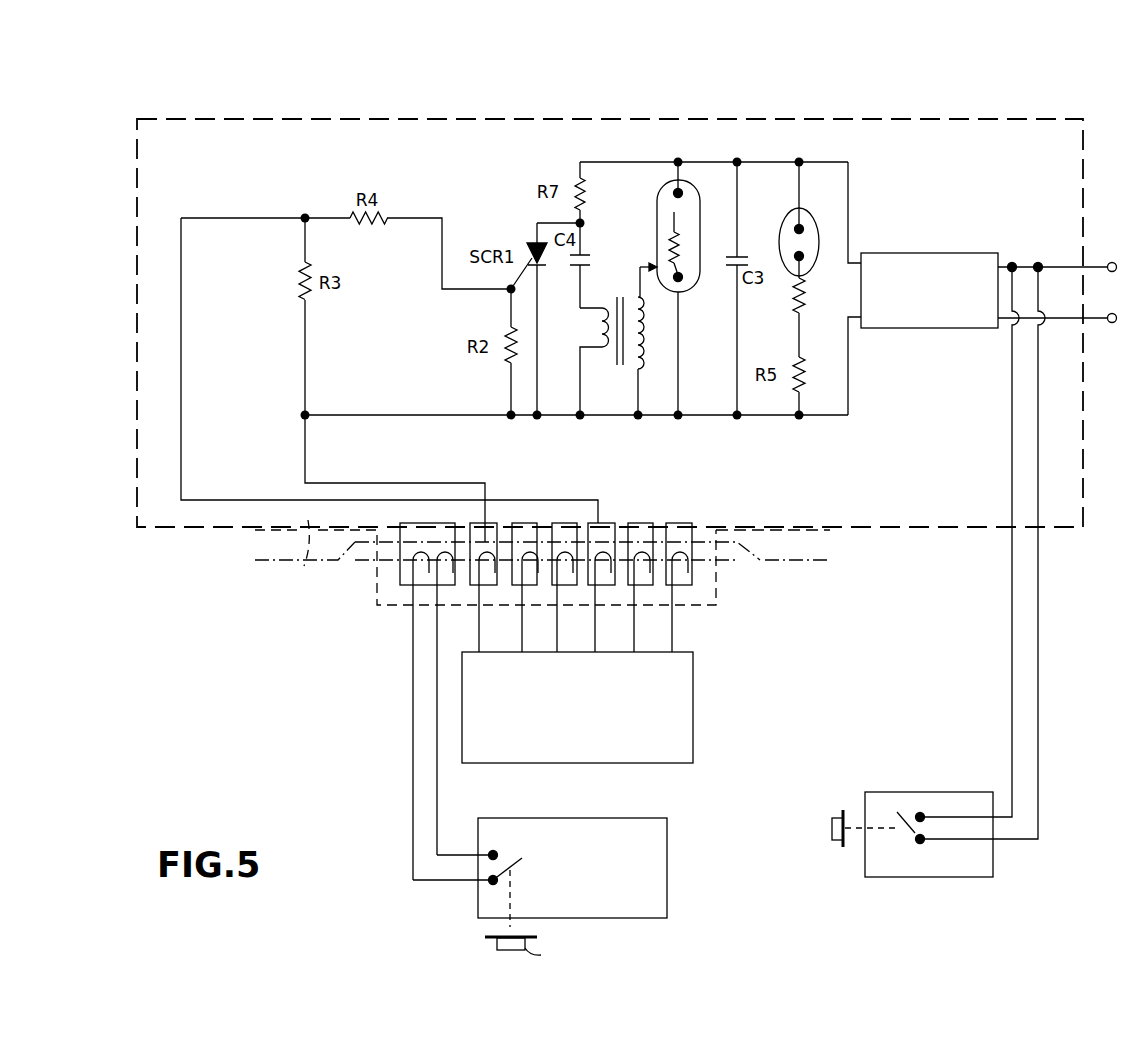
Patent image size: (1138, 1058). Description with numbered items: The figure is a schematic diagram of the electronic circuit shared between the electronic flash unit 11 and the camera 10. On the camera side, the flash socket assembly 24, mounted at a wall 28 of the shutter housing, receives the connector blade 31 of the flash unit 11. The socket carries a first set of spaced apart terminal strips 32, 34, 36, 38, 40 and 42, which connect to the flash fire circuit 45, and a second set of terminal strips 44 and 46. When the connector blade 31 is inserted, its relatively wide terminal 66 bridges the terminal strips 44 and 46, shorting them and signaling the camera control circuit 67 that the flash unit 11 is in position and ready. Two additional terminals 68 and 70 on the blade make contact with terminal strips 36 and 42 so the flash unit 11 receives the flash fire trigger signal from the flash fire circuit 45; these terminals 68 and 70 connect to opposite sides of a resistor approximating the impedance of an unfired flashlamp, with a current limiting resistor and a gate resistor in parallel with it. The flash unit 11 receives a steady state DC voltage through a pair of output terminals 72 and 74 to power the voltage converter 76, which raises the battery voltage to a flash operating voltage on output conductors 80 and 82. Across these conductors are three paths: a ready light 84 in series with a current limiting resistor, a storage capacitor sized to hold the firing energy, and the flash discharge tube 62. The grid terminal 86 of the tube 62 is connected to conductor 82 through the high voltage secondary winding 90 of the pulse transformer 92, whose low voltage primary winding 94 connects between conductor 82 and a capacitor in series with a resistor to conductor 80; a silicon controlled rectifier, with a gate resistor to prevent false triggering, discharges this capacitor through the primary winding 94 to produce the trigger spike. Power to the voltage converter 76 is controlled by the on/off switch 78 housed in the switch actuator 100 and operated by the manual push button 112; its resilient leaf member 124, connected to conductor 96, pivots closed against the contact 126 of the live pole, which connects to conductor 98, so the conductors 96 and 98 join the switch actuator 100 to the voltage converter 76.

The camera 10 is at (790, 560).
The electronic flash unit 11 is at (1058, 112).
The flash socket assembly 24 is at (742, 534).
The wall 28 is at (295, 536).
The connector blade 31 is at (718, 580).
The terminal strip 32 is at (678, 565).
The terminal strip 34 is at (640, 565).
The terminal strip 36 is at (600, 565).
The terminal strip 38 is at (562, 565).
The terminal strip 40 is at (527, 565).
The terminal strip 42 is at (484, 565).
The terminal strip 44 is at (442, 563).
The terminal strip 46 is at (418, 562).
The flash fire circuit 45 is at (694, 728).
The flash discharge tube 62 is at (700, 240).
The wide terminal 66 is at (415, 522).
The camera control circuit 67 is at (668, 878).
The terminal 68 is at (603, 530).
The terminal 70 is at (488, 535).
The output terminal 72 is at (1114, 261).
The output terminal 74 is at (1114, 323).
The voltage converter 76 is at (960, 330).
The on/off switch 78 is at (904, 807).
The output conductor 80 is at (850, 230).
The output conductor 82 is at (849, 402).
The ready light 84 is at (812, 226).
The grid terminal 86 is at (648, 262).
The high voltage secondary winding 90 is at (648, 332).
The pulse transformer 92 is at (627, 378).
The low voltage primary winding 94 is at (600, 330).
The conductor 96 is at (1011, 705).
The conductor 98 is at (1039, 722).
The switch actuator 100 is at (895, 886).
The manual push button 112 is at (830, 828).
The resilient leaf member 124 is at (900, 828).
The contact 126 is at (922, 814).